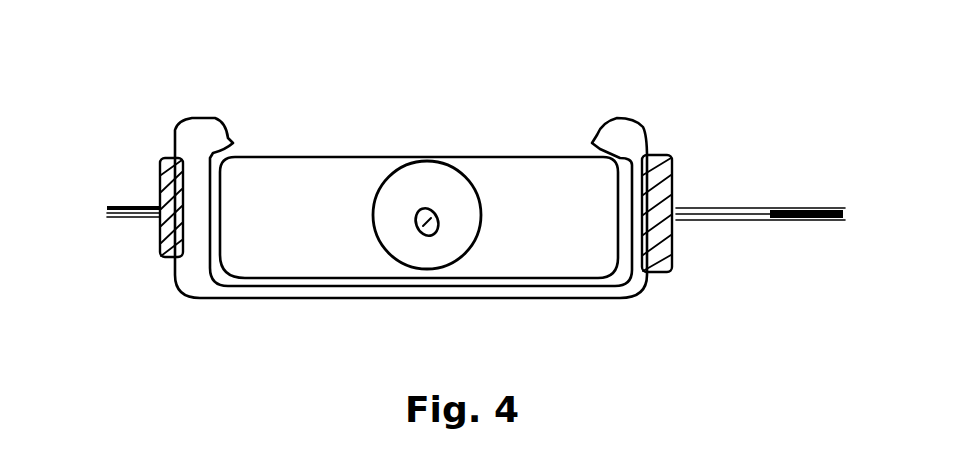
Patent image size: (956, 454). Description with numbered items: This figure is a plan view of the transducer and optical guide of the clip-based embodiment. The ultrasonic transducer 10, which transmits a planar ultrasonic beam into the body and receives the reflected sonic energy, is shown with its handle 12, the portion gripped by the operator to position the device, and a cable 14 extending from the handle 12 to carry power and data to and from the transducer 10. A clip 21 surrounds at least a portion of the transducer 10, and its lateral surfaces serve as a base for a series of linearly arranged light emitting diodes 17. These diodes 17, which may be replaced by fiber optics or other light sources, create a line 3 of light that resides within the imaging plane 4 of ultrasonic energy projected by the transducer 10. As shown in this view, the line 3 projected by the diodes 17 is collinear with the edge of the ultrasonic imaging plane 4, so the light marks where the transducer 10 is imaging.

The line 3 is at (115, 203).
The imaging plane 4 is at (143, 220).
The ultrasonic transducer 10 is at (508, 175).
The handle 12 is at (393, 200).
The cable 14 is at (433, 210).
The light emitting diodes 17 is at (160, 172).
The clip 21 is at (218, 293).